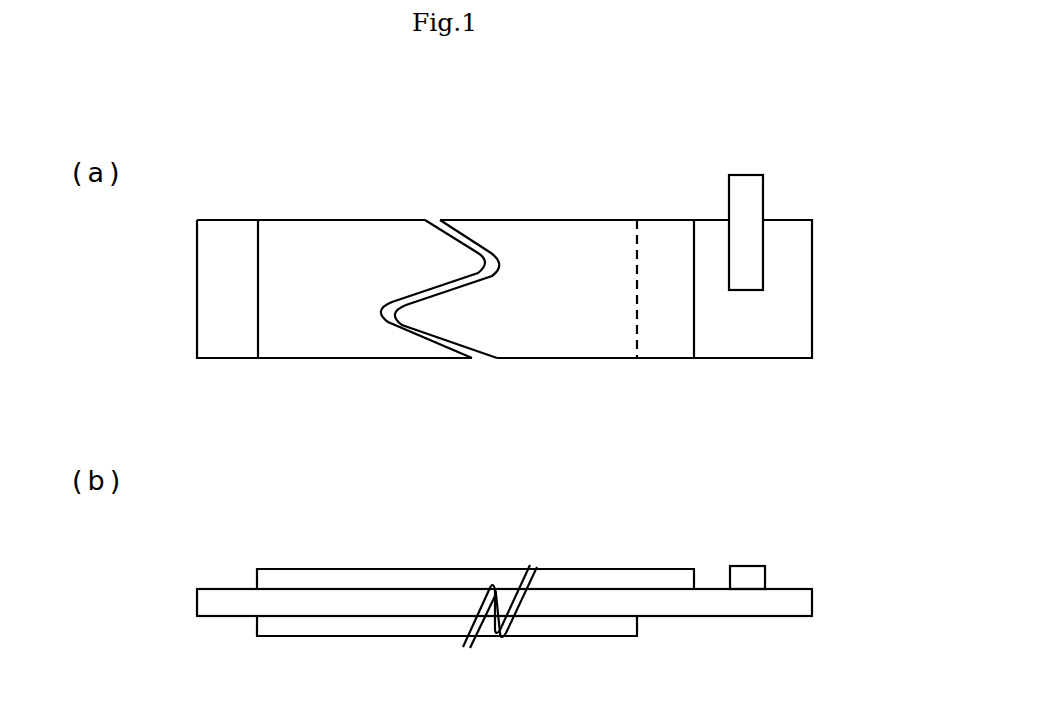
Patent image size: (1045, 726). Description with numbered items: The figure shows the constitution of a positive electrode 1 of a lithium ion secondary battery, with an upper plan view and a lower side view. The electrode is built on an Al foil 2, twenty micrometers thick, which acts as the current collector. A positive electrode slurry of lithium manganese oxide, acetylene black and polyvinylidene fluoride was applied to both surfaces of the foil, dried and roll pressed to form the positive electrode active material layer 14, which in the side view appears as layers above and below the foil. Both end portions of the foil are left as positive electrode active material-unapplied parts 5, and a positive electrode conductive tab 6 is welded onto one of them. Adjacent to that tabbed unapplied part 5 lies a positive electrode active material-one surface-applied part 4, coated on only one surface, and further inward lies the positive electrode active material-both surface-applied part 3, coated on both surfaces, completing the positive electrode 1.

The positive electrode 1 is at (175, 292).
The Al foil 2 is at (733, 606).
The positive electrode active material-both surface-applied part 3 is at (322, 245).
The positive electrode active material-one surface-applied part 4 is at (667, 245).
The positive electrode active material-unapplied part 5 is at (234, 342).
The positive electrode conductive tab 6 is at (745, 180).
The positive electrode active material layer 14 is at (585, 574).